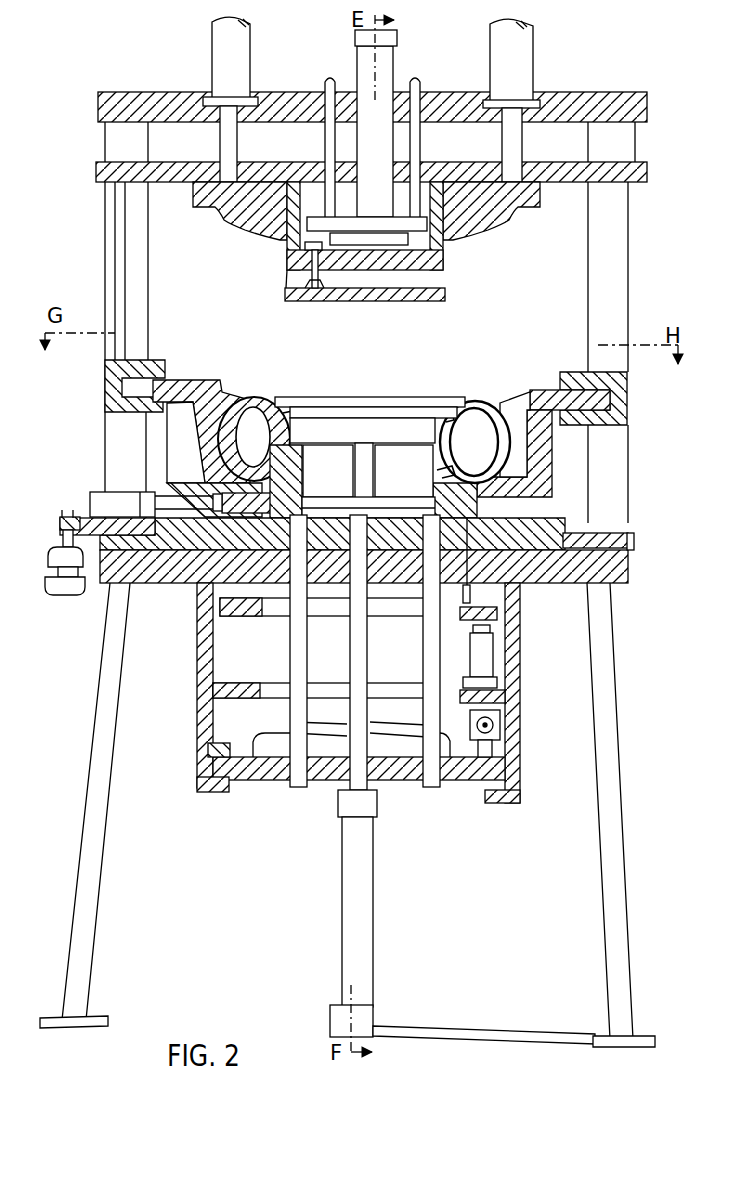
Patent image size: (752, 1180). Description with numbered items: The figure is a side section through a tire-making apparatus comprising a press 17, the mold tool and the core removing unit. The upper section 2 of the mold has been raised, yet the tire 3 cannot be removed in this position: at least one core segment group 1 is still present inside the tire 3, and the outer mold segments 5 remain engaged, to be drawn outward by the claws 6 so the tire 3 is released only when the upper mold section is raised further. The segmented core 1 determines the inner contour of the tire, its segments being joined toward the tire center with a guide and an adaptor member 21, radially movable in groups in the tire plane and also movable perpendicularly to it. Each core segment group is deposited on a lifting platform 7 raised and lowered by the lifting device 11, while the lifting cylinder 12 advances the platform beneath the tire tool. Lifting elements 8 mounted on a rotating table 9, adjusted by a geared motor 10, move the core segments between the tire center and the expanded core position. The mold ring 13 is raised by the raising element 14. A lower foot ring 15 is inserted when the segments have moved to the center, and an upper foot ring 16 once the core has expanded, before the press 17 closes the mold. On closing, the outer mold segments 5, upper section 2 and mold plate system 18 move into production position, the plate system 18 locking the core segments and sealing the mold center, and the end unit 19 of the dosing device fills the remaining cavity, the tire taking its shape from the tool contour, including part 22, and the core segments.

The core segment group 1 is at (266, 396).
The upper section of the mold 2 is at (208, 198).
The tire 3 is at (236, 388).
The outer mold segments 5 is at (212, 380).
The claws 6 is at (155, 360).
The lifting platform 7 is at (400, 530).
The lifting elements 8 is at (95, 497).
The rotating table 9 is at (118, 527).
The geared motor 10 is at (67, 578).
The lifting device 11 is at (360, 895).
The lifting cylinder 12 is at (500, 733).
The mold ring 13 is at (503, 510).
The raising element 14 is at (482, 658).
The lower foot ring 15 is at (300, 445).
The upper foot ring 16 is at (290, 418).
The press 17 is at (528, 45).
The mold plate system 18 is at (290, 288).
The end unit of the dosing device 19 is at (392, 68).
The adaptor member 21 is at (303, 500).
The tool contour part 22 is at (177, 435).